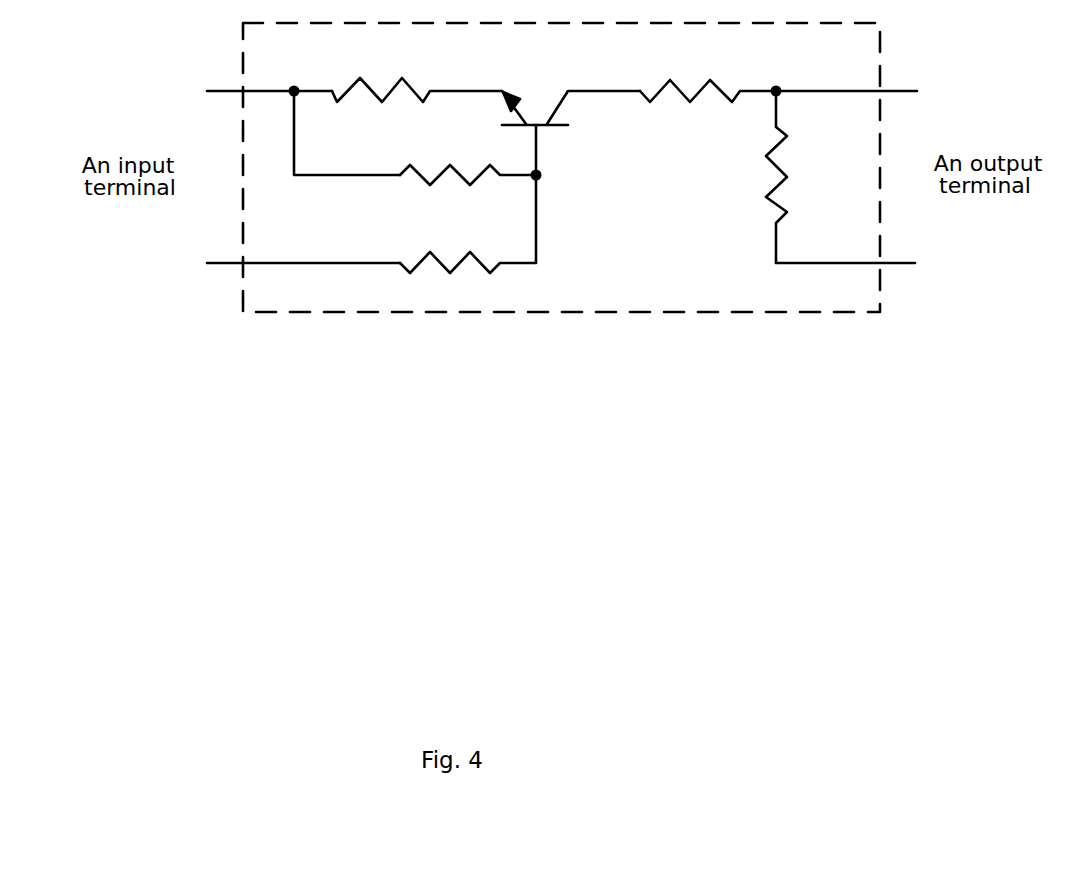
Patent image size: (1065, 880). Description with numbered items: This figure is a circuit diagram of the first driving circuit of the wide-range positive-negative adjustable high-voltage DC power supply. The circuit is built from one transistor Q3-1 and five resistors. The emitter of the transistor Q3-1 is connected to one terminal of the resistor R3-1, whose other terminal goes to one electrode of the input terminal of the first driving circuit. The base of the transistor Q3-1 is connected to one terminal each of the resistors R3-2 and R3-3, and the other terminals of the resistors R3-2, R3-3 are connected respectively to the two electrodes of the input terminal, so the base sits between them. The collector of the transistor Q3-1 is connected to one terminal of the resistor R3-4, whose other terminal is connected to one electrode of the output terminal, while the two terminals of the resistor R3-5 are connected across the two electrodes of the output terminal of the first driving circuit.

The resistor R3-1 is at (415, 74).
The resistor R3-2 is at (466, 158).
The resistor R3-3 is at (466, 224).
The resistor R3-4 is at (777, 74).
The resistor R3-5 is at (814, 177).
The transistor Q3-1 is at (568, 111).